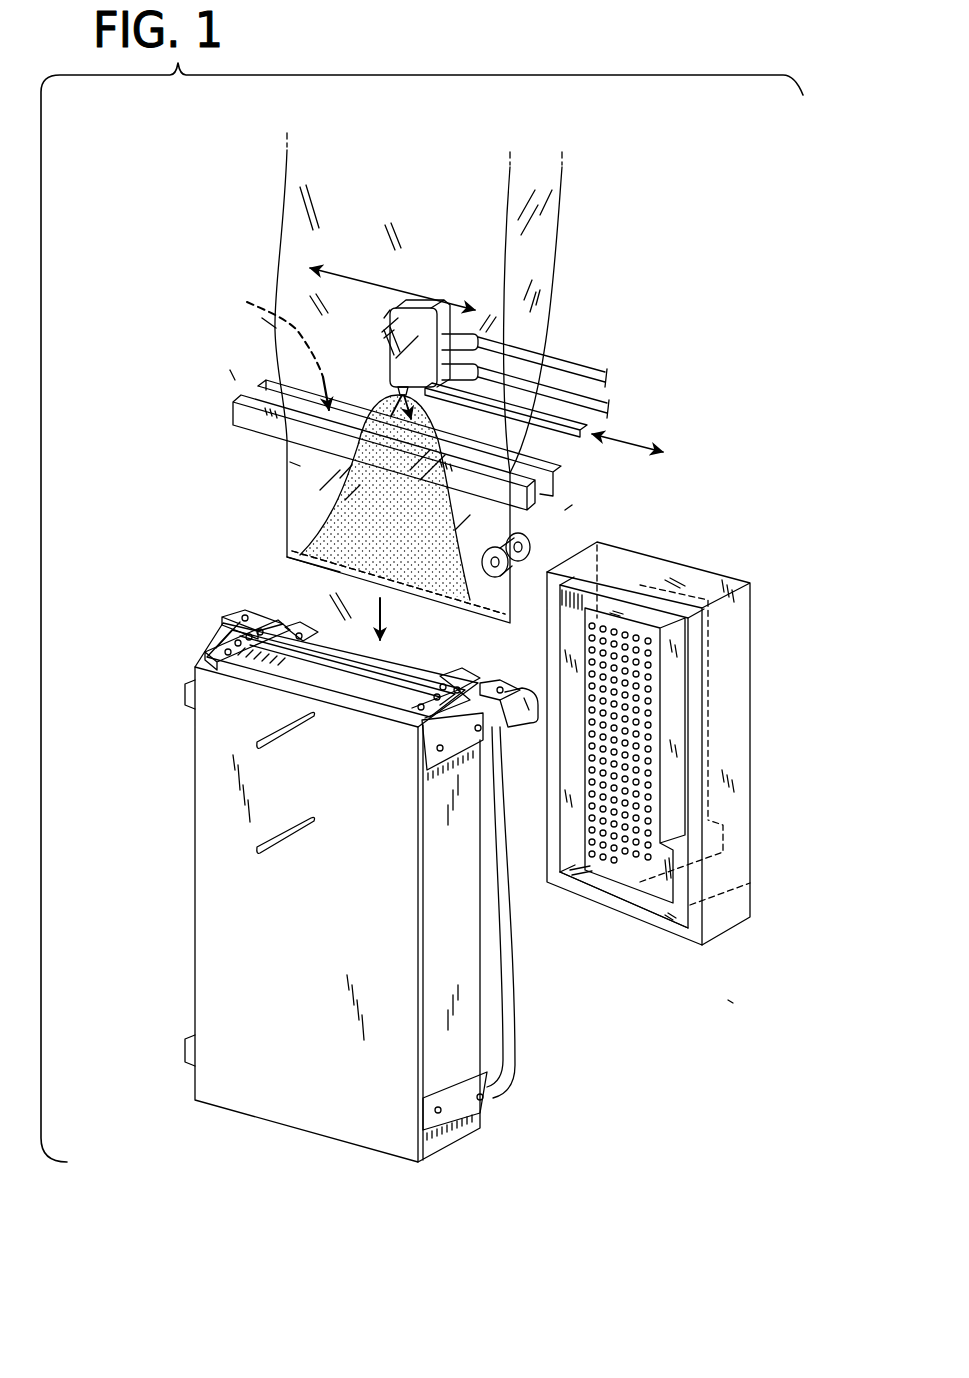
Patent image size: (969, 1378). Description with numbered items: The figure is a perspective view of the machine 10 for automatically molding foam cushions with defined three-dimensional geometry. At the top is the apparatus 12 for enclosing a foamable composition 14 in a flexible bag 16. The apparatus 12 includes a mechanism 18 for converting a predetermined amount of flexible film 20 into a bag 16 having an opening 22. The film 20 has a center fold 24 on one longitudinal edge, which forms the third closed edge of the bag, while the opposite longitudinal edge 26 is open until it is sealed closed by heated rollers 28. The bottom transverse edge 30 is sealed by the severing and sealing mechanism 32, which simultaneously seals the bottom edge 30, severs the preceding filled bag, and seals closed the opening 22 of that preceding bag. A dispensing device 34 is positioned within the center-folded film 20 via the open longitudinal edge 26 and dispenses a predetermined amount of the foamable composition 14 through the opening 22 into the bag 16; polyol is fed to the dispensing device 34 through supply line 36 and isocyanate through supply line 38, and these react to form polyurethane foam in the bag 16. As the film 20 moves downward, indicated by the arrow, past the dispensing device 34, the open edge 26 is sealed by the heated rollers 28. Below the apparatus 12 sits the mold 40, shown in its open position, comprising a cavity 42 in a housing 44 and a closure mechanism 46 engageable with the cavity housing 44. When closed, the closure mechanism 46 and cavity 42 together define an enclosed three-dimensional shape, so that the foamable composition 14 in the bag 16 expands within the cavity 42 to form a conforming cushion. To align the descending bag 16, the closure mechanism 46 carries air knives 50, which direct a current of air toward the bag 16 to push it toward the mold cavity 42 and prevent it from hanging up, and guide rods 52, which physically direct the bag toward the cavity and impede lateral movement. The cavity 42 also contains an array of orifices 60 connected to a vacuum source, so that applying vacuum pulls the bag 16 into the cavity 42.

The machine 10 is at (689, 292).
The apparatus 12 is at (232, 368).
The foamable composition 14 is at (351, 534).
The flexible bag 16 is at (300, 464).
The mechanism 18 is at (568, 507).
The flexible film 20 is at (285, 200).
The opening 22 is at (255, 304).
The center fold 24 is at (276, 328).
The longitudinal edge 26 is at (512, 596).
The heated rollers 28 is at (530, 545).
The bottom transverse edge 30 is at (335, 572).
The severing and sealing mechanism 32 is at (232, 412).
The dispensing device 34 is at (418, 322).
The supply line 36 is at (602, 379).
The supply line 38 is at (604, 408).
The mold 40 is at (726, 1000).
The cavity 42 is at (668, 905).
The housing 44 is at (738, 747).
The closure mechanism 46 is at (292, 1128).
The air knives 50 is at (512, 723).
The guide rods 52 is at (515, 1030).
The orifices 60 is at (650, 708).